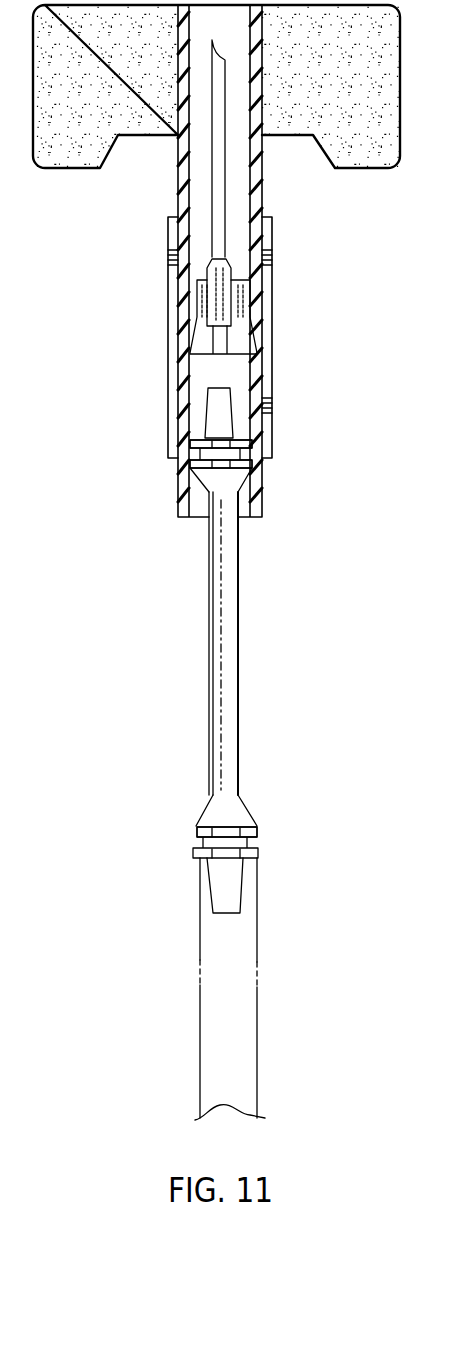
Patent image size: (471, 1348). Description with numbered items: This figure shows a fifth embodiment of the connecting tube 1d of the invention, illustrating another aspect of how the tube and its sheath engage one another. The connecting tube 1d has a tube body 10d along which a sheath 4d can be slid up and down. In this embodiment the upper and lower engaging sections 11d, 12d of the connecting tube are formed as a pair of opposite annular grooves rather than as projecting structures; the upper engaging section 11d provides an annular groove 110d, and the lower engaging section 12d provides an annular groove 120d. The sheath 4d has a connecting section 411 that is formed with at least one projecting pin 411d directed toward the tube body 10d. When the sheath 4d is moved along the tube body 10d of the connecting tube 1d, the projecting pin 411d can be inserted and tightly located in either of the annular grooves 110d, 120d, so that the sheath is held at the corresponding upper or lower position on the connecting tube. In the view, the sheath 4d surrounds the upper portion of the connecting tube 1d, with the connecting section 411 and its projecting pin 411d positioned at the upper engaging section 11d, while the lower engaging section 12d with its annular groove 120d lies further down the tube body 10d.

The sheath 4d is at (273, 322).
The connecting section 411 is at (195, 434).
The projecting pin 411d is at (255, 456).
The upper engaging section 11d is at (246, 459).
The annular groove 110d is at (249, 472).
The connecting tube 1d is at (234, 653).
The tube body 10d is at (240, 700).
The lower engaging section 12d is at (244, 820).
The annular groove 120d is at (200, 842).